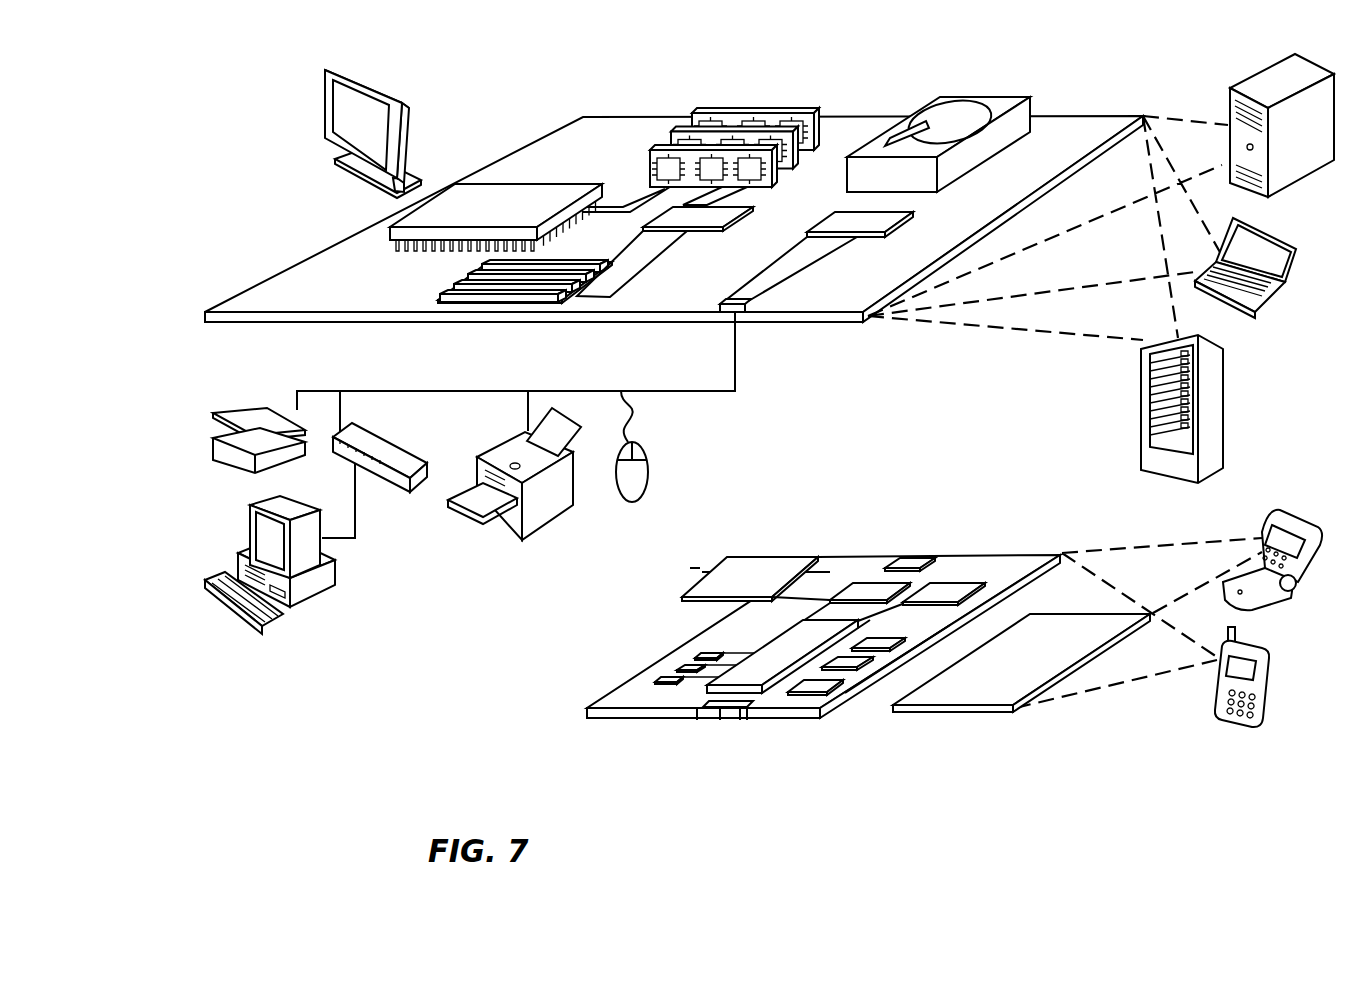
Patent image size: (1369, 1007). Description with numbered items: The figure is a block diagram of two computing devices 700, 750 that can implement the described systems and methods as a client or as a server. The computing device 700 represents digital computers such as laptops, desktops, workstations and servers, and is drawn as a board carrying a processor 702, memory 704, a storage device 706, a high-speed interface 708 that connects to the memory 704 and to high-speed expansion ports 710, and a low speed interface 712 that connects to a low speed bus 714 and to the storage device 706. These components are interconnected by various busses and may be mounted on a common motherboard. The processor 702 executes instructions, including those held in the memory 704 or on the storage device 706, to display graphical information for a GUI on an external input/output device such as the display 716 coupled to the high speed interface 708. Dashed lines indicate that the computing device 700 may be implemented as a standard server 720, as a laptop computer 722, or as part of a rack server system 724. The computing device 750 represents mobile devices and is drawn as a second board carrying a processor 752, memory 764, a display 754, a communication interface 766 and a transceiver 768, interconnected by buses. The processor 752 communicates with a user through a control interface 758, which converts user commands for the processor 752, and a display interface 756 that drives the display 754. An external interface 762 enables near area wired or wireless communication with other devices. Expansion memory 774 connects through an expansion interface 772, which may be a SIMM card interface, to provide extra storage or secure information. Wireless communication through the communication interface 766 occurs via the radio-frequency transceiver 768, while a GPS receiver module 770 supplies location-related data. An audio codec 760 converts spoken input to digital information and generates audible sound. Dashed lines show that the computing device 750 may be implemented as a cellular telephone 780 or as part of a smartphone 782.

The computing device 700 is at (512, 92).
The processor 702 is at (390, 230).
The memory 704 is at (702, 108).
The storage device 706 is at (930, 105).
The high-speed interface 708 is at (690, 215).
The high-speed expansion ports 710 is at (455, 287).
The low speed interface 712 is at (840, 217).
The low speed bus 714 is at (742, 313).
The display 716 is at (328, 70).
The standard server 720 is at (1224, 106).
The laptop computer 722 is at (1292, 243).
The rack server system 724 is at (1142, 436).
The computing device 750 is at (563, 720).
The processor 752 is at (755, 680).
The display 754 is at (982, 694).
The display interface 756 is at (820, 694).
The control interface 758 is at (860, 683).
The audio codec 760 is at (875, 650).
The external interface 762 is at (721, 716).
The memory 764 is at (660, 668).
The communication interface 766 is at (868, 592).
The transceiver 768 is at (945, 590).
The GPS receiver module 770 is at (908, 563).
The expansion interface 772 is at (800, 568).
The expansion memory 774 is at (727, 568).
The cellular telephone 780 is at (1268, 510).
The smartphone 782 is at (1217, 686).